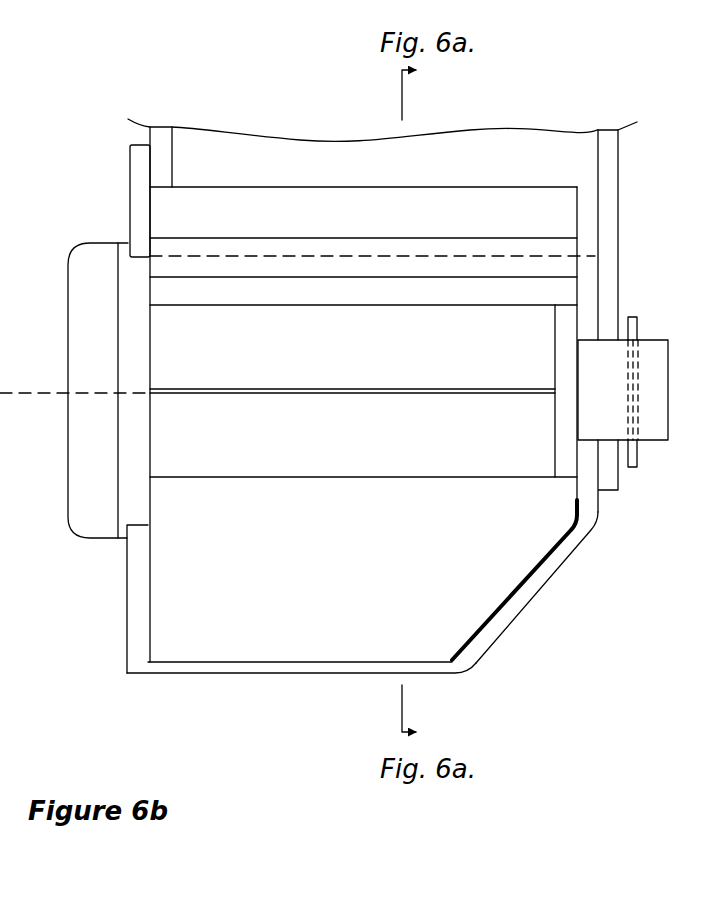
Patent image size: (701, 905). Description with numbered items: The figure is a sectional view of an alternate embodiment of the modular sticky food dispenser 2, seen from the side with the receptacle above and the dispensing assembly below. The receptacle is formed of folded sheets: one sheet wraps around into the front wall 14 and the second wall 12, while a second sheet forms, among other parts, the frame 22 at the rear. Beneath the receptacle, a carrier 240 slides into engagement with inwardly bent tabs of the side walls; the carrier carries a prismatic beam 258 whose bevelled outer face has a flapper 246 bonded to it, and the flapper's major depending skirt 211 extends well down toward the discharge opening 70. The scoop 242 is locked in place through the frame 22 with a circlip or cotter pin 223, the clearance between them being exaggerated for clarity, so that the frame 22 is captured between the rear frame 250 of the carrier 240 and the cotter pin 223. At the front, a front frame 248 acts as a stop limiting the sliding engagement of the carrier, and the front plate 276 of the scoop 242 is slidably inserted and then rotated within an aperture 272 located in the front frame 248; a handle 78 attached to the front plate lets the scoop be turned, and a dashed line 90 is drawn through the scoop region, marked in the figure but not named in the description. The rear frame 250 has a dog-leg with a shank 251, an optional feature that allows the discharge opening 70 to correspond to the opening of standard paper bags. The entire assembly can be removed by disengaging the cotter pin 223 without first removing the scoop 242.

The modular sticky food dispenser 2 is at (67, 136).
The second wall 12 is at (513, 155).
The front wall 14 is at (147, 135).
The rear frame 22 is at (623, 156).
The discharge opening 70 is at (338, 684).
The handle 78 is at (91, 490).
The center line 90 is at (52, 399).
The skirt 211 is at (208, 623).
The cotter pin 223 is at (633, 313).
The carrier 240 is at (124, 630).
The scoop 242 is at (470, 445).
The flapper 246 is at (309, 575).
The front frame 248 is at (128, 157).
The rear frame 250 is at (605, 514).
The shank 251 is at (515, 628).
The prismatic beam 258 is at (283, 208).
The aperture 272 is at (142, 263).
The front plate 276 is at (125, 470).